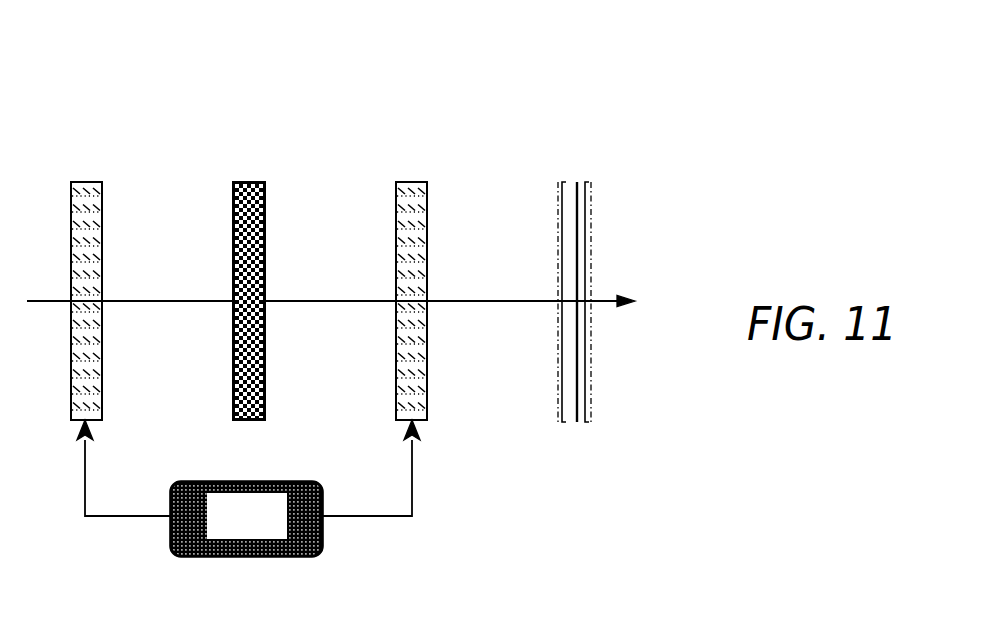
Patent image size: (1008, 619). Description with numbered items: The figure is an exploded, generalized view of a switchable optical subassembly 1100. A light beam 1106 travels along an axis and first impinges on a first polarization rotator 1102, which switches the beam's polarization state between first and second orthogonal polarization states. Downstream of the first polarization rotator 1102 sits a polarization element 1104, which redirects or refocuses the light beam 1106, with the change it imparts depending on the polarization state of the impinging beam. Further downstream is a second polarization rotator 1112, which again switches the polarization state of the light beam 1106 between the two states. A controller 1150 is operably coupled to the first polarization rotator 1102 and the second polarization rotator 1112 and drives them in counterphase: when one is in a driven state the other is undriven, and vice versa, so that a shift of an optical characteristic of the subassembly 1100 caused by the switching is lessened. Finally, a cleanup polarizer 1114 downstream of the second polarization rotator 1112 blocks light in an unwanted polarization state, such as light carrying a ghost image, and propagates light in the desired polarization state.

The switchable optical subassembly 1100 is at (368, 36).
The first polarization rotator 1102 is at (82, 182).
The polarization element 1104 is at (245, 182).
The light beam 1106 is at (150, 301).
The second polarization rotator 1112 is at (410, 182).
The cleanup polarizer 1114 is at (570, 182).
The controller 1150 is at (220, 527).